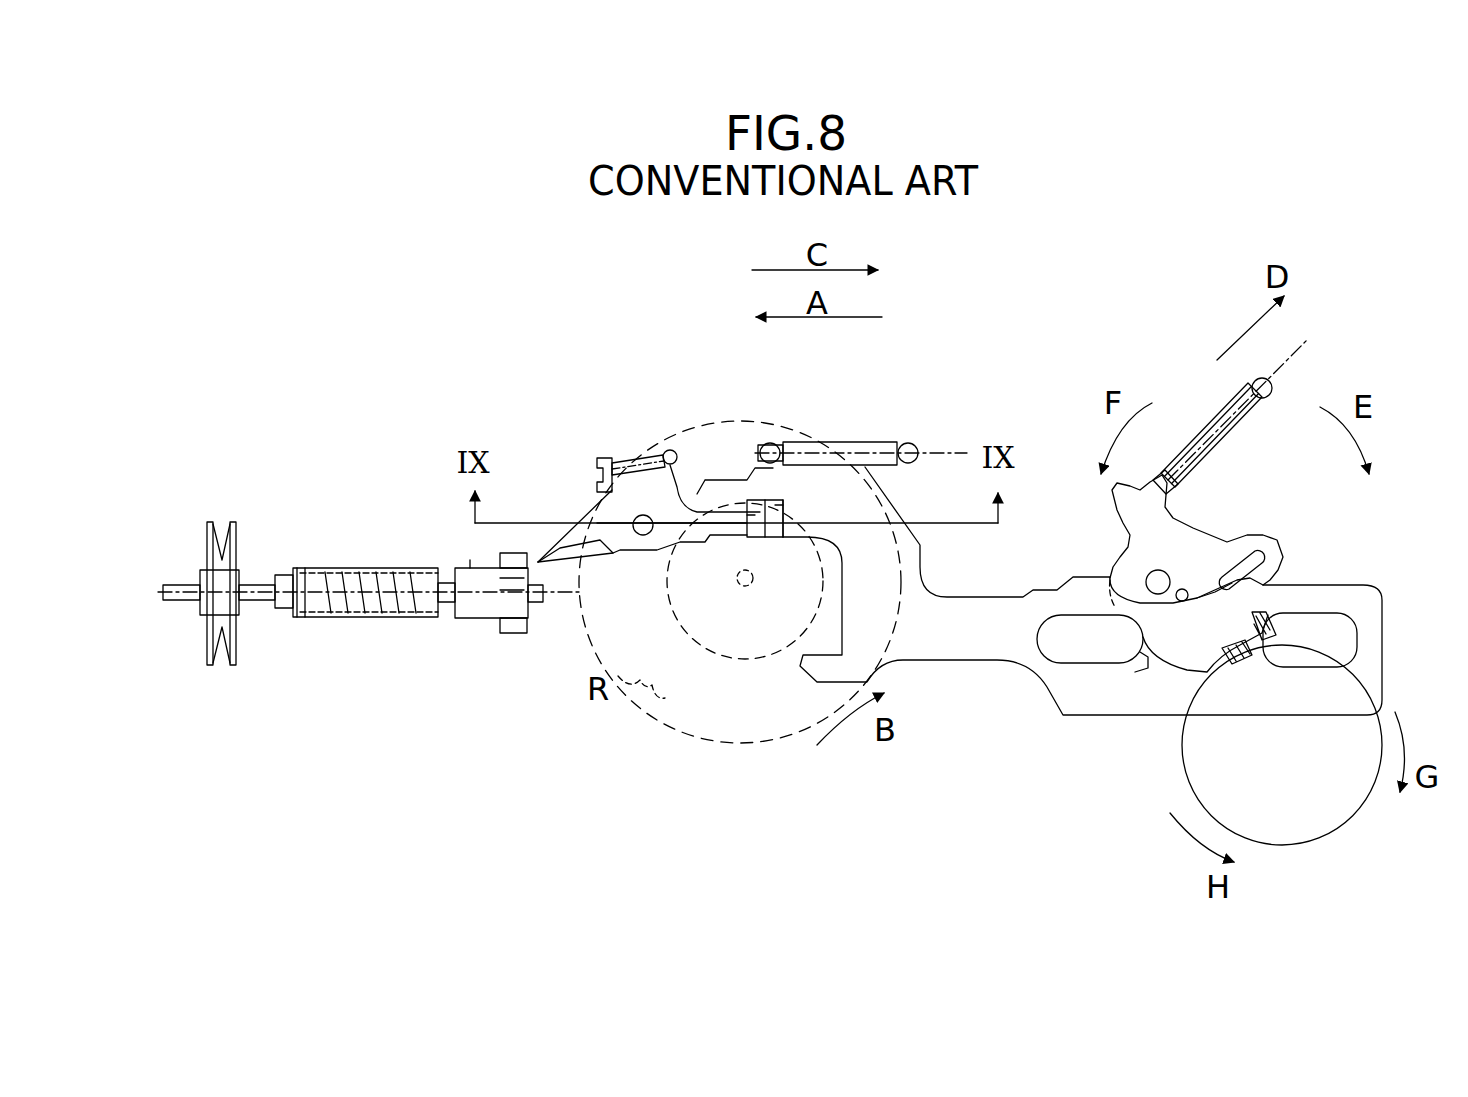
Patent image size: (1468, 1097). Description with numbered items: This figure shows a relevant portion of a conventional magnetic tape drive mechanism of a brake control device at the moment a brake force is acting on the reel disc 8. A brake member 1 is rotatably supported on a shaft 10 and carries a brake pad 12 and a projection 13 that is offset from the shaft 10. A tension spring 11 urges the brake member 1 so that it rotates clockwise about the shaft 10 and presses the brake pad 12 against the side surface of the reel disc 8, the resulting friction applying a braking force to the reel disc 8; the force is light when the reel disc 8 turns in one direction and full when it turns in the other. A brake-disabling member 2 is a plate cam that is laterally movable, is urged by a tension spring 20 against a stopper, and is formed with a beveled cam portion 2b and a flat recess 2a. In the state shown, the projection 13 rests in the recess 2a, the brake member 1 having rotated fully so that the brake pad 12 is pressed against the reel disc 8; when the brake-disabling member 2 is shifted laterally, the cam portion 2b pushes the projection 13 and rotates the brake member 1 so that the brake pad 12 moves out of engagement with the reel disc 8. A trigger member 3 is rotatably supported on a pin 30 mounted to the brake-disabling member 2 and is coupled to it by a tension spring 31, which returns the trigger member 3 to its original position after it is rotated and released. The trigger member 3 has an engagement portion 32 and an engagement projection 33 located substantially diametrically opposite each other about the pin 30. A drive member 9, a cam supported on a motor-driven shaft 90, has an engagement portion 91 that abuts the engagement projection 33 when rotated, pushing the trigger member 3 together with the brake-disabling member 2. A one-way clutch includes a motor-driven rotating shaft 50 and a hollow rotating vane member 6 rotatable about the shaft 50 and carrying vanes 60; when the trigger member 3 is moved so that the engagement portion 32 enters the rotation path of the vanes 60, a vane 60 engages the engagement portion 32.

The brake member 1 is at (1255, 535).
The brake-disabling member 2 is at (969, 645).
The recess 2a is at (1163, 600).
The cam portion 2b is at (1207, 588).
The trigger member 3 is at (687, 487).
The rotating vane member 6 is at (468, 580).
The reel disc 8 is at (1315, 822).
The drive member 9 is at (760, 742).
The shaft 10 is at (1147, 578).
The tension spring 11 is at (1225, 405).
The brake pad 12 is at (1265, 632).
The projection 13 is at (1185, 588).
The tension spring 20 is at (878, 440).
The pin 30 is at (643, 536).
The tension spring 31 is at (632, 458).
The engagement portion 32 is at (560, 546).
The engagement projection 33 is at (748, 540).
The rotating shaft 50 is at (540, 605).
The vane 60 is at (510, 630).
The shaft 90 is at (745, 587).
The engagement portion 91 is at (797, 543).